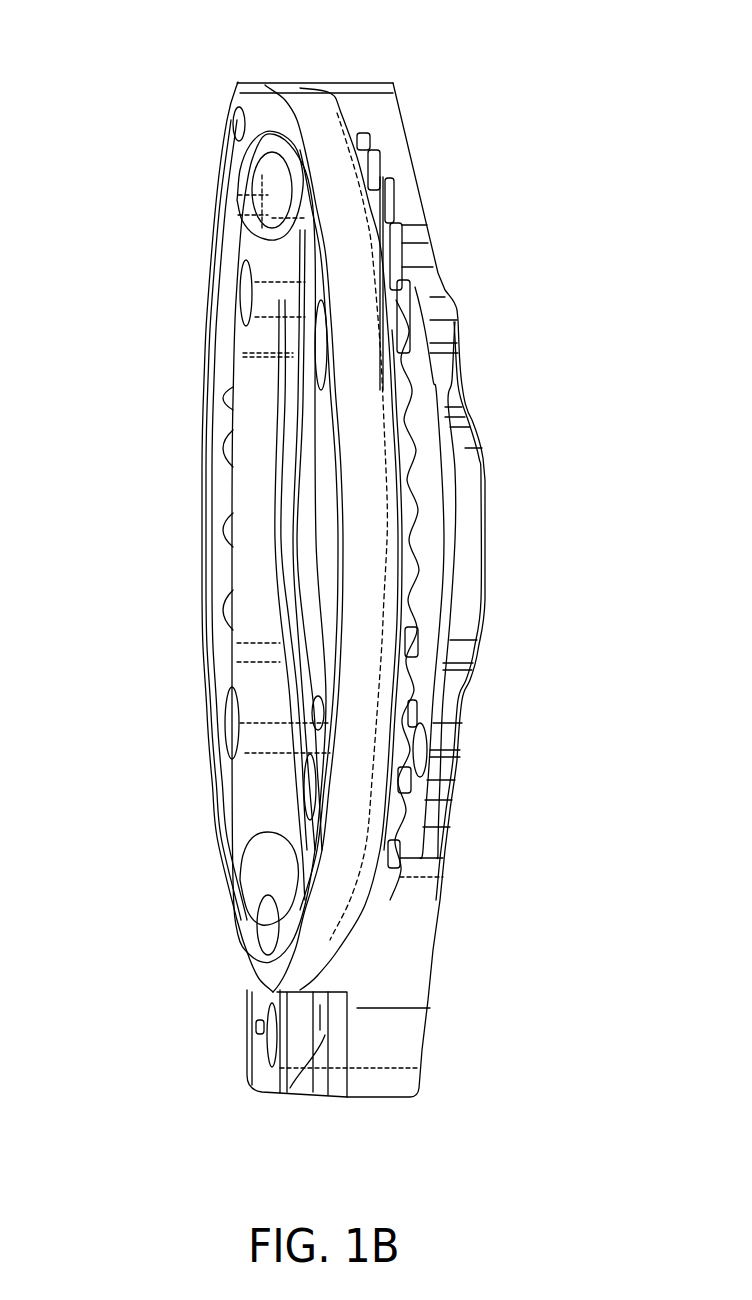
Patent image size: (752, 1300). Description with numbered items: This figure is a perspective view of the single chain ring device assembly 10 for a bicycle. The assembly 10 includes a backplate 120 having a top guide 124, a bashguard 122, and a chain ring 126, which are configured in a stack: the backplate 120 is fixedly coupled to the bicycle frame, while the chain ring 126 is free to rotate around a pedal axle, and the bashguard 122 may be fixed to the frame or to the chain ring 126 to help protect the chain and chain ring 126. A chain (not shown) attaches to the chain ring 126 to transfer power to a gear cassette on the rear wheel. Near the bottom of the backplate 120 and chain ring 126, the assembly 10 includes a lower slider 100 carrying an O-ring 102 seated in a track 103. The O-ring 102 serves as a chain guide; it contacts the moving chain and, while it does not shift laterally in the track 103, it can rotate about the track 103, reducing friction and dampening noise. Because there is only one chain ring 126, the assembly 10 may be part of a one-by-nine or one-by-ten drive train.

The single chain ring device assembly 10 is at (324, 594).
The lower slider 100 is at (411, 590).
The O-ring 102 is at (346, 1088).
The track 103 is at (295, 1087).
The backplate 120 is at (496, 542).
The bashguard 122 is at (237, 537).
The top guide 124 is at (339, 497).
The chain ring 126 is at (438, 516).